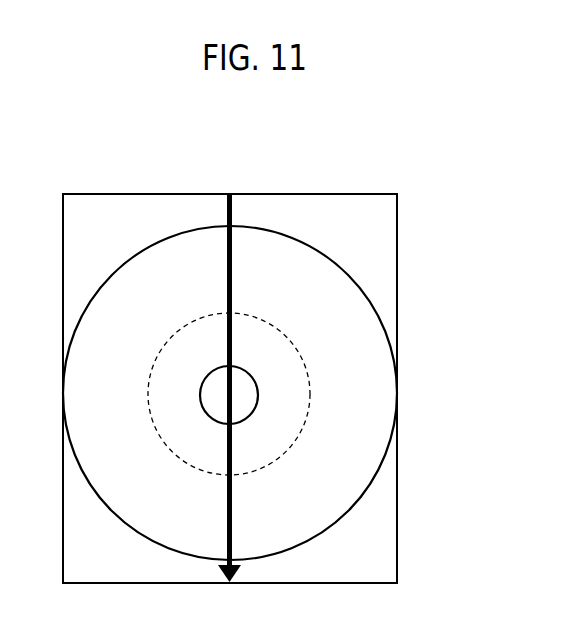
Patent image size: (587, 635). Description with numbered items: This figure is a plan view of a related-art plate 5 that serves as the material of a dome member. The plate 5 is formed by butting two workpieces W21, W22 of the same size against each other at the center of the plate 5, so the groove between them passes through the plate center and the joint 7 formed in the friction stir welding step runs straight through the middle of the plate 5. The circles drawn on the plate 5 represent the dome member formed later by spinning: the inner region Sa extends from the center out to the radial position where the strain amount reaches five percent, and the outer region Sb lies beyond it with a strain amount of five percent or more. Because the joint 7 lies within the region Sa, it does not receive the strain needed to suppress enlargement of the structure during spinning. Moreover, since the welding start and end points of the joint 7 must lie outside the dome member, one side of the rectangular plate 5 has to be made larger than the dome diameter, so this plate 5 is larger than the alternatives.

The plate 5 is at (398, 219).
The workpiece W21 is at (135, 193).
The workpiece W22 is at (307, 193).
The joint 7 is at (226, 213).
The region Sa is at (272, 362).
The region Sb is at (358, 410).